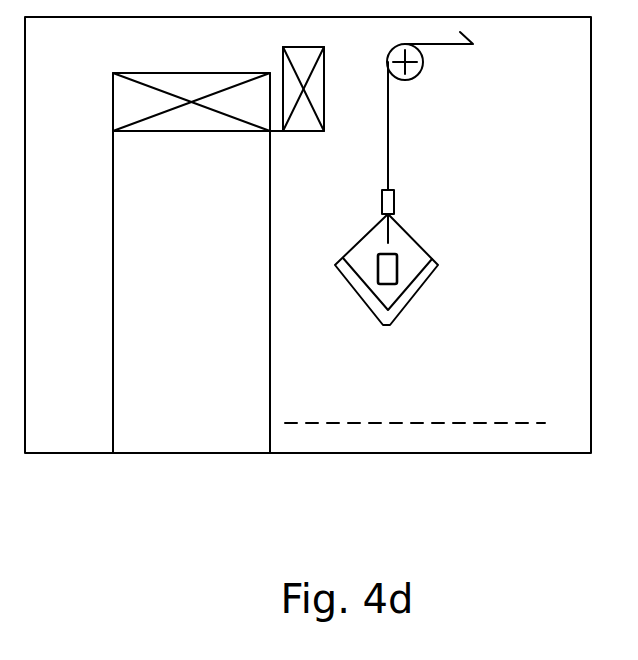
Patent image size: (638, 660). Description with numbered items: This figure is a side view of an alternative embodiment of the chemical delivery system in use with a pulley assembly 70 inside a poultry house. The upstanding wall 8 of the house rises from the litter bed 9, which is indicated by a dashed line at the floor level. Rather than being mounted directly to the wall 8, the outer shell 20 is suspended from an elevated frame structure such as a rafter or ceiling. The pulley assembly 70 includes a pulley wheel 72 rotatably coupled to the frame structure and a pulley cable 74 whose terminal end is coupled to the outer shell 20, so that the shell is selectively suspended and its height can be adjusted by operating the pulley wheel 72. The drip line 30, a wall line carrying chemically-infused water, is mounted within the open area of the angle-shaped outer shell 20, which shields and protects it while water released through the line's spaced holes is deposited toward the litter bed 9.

The upstanding wall 8 is at (168, 322).
The litter bed 9 is at (504, 437).
The outer shell 20 is at (426, 300).
The wall line 30 is at (392, 270).
The pulley assembly 70 is at (486, 127).
The pulley wheel 72 is at (423, 55).
The pulley cable 74 is at (390, 172).